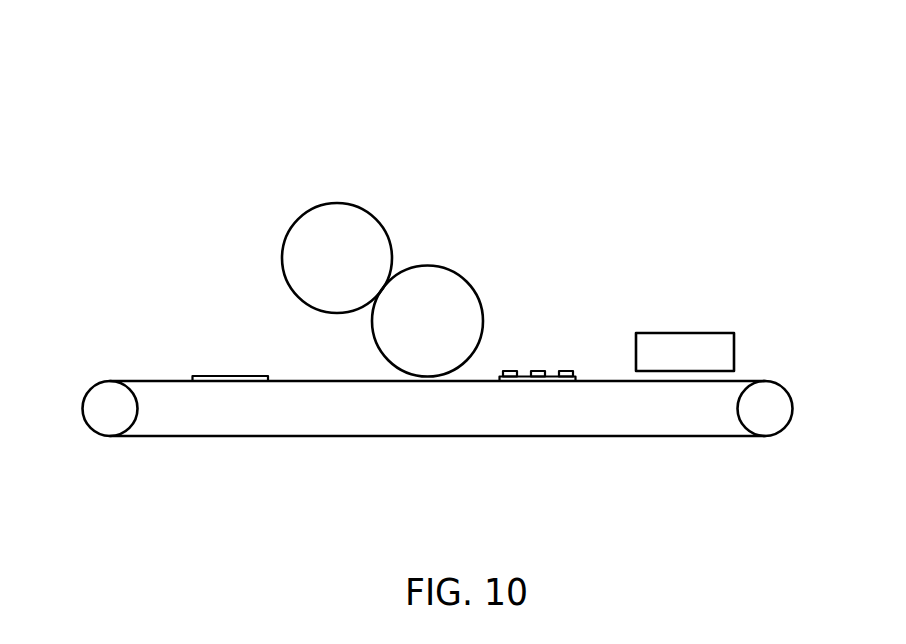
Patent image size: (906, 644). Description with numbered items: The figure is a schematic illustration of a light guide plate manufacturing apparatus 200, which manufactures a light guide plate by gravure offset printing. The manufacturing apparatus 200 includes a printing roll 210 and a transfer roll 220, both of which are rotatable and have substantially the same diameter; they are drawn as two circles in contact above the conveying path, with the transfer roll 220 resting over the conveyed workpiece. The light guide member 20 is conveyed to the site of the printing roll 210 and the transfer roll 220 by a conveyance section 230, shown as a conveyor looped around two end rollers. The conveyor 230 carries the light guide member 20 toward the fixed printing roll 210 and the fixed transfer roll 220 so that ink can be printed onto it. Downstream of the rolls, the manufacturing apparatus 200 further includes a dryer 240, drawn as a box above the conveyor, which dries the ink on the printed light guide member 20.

The light guide plate manufacturing apparatus 200 is at (567, 102).
The printing roll 210 is at (321, 202).
The transfer roll 220 is at (433, 265).
The conveyance section 230 is at (88, 390).
The dryer 240 is at (734, 341).
The light guide member 20 is at (191, 378).